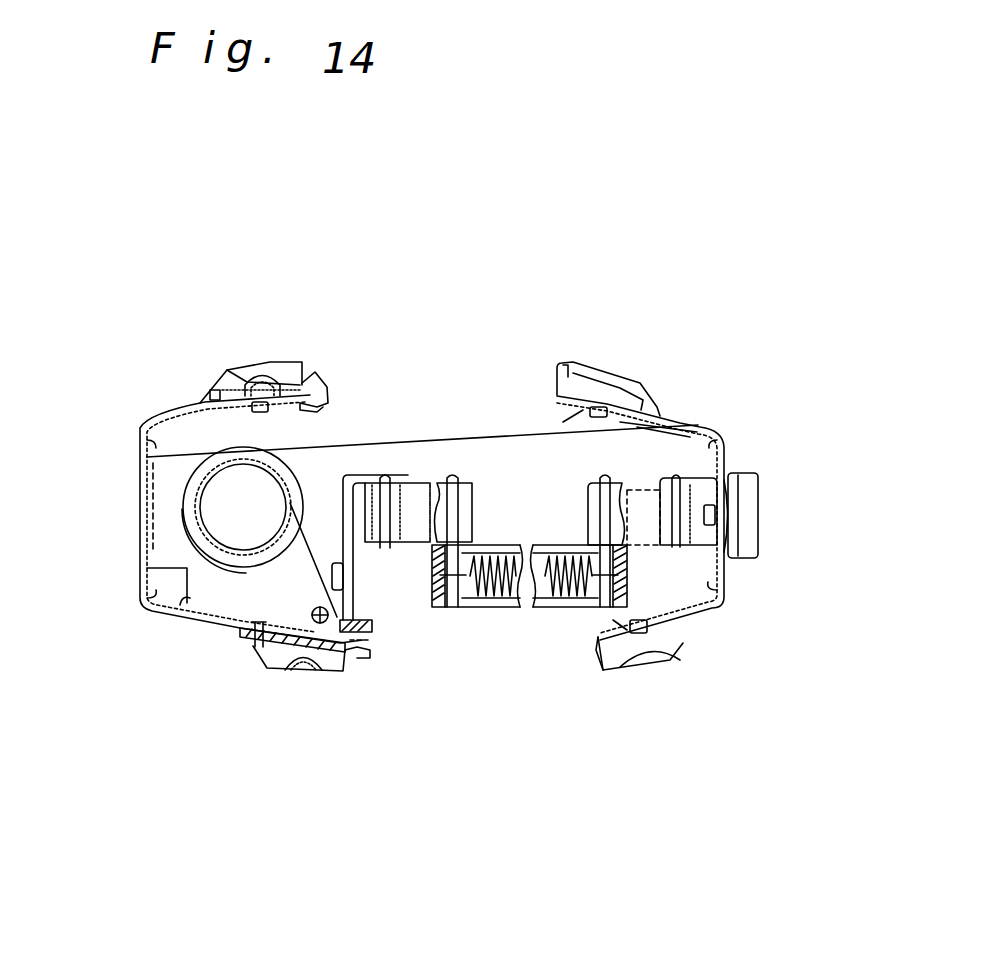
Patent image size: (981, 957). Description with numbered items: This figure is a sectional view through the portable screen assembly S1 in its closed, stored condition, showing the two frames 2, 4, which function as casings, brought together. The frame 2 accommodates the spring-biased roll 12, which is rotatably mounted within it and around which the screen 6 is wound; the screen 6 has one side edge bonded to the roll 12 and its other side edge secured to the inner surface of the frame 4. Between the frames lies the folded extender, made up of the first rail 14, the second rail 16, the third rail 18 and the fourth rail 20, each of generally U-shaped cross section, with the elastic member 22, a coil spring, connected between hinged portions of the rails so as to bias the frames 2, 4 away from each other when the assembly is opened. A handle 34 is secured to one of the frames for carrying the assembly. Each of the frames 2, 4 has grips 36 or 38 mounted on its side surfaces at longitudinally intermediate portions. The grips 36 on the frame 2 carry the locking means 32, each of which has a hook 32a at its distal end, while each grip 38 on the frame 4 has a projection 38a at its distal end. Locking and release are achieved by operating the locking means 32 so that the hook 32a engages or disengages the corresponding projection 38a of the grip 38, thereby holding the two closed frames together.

The frame 2 is at (143, 560).
The frame 4 is at (720, 606).
The screen 6 is at (483, 440).
The spring-biased roll 12 is at (238, 535).
The first rail 14 is at (710, 527).
The second rail 16 is at (433, 610).
The third rail 18 is at (585, 605).
The fourth rail 20 is at (343, 475).
The elastic member 22 is at (515, 585).
The locking means 32 is at (263, 363).
The hook 32a is at (325, 373).
The handle 34 is at (762, 492).
The grip 36 is at (223, 373).
The grip 38 is at (647, 380).
The projection 38a is at (557, 363).
The portable screen assembly S1 is at (512, 333).